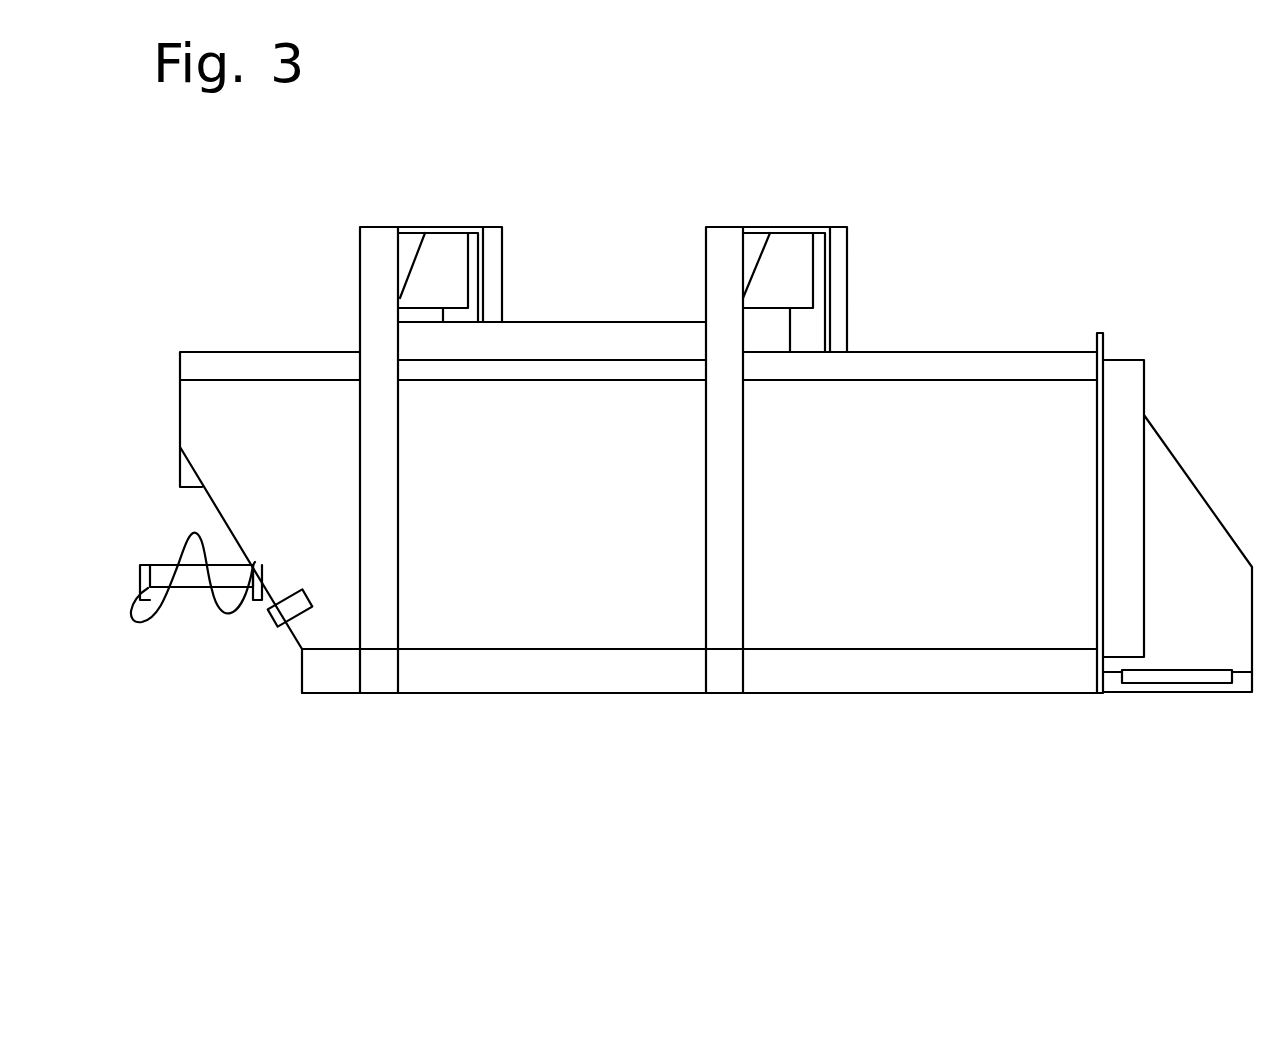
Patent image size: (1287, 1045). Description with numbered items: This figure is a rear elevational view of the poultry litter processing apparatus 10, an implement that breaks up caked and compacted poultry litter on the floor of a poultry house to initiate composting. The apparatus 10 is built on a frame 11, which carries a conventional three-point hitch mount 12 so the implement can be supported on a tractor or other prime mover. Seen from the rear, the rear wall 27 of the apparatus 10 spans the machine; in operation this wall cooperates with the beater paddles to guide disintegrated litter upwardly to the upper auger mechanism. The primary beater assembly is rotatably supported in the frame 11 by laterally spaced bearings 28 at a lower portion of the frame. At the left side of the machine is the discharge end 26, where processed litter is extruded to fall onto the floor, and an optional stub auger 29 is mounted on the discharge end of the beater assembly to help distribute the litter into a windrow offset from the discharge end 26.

The poultry litter processing apparatus 10 is at (682, 481).
The frame 11 is at (905, 368).
The three-point hitch mount 12 is at (452, 248).
The discharge end 26 is at (227, 686).
The rear wall 27 is at (862, 625).
The bearings 28 is at (255, 600).
The stub auger 29 is at (188, 590).